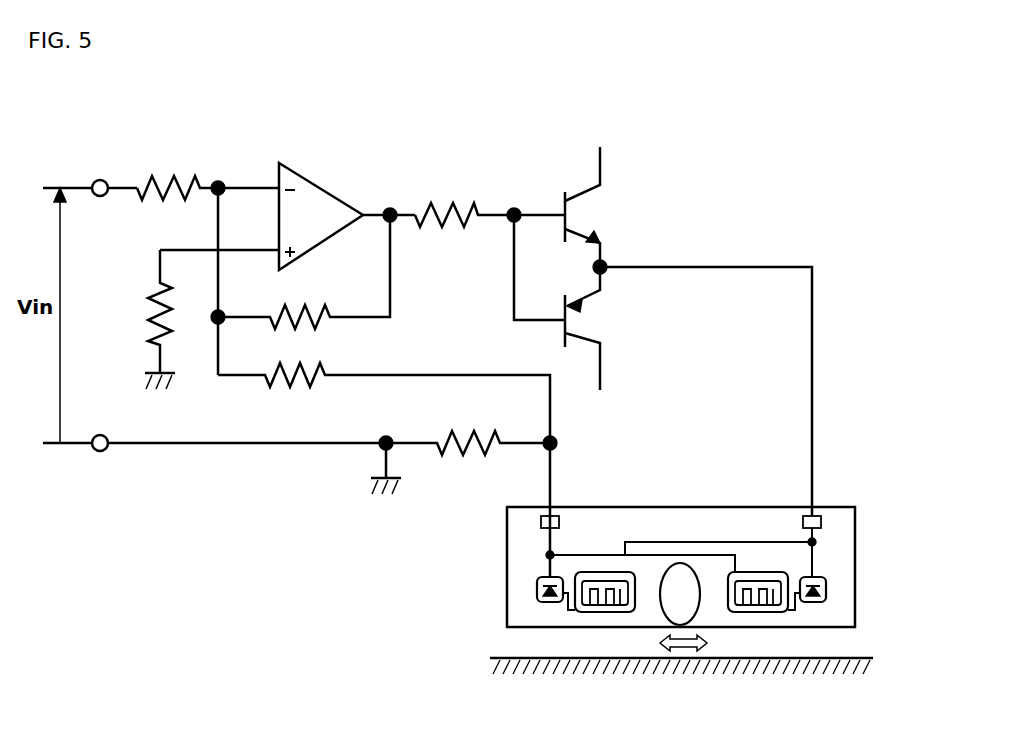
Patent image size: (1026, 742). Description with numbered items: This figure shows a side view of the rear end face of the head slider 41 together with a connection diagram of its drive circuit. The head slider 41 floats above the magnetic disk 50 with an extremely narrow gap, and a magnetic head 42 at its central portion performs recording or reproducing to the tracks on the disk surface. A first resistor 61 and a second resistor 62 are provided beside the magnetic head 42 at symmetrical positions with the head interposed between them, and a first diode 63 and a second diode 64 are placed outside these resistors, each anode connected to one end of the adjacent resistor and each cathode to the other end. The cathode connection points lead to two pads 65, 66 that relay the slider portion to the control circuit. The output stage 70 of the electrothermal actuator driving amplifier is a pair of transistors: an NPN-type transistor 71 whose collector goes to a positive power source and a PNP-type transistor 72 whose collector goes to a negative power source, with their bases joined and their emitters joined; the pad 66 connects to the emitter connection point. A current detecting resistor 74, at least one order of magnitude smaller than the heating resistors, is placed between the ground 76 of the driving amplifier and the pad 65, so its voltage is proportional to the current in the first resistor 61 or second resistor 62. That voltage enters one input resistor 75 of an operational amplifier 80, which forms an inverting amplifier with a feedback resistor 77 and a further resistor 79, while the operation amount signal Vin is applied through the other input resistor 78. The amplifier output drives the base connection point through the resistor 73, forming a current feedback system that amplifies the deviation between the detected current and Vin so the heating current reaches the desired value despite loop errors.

The head slider 41 is at (858, 608).
The magnetic head 42 is at (684, 566).
The magnetic disk 50 is at (497, 657).
The first resistor 61 is at (608, 613).
The second resistor 62 is at (756, 613).
The first diode 63 is at (546, 603).
The second diode 64 is at (836, 603).
The pad 65 is at (567, 505).
The pad 66 is at (822, 523).
The output stage 70 is at (549, 183).
The NPN-type transistor 71 is at (583, 206).
The PNP-type transistor 72 is at (585, 325).
The resistor 73 is at (432, 203).
The current detecting resistor 74 is at (466, 450).
The input resistor 75 is at (296, 398).
The ground 76 is at (370, 482).
The feedback resistor 77 is at (312, 314).
The input resistor 78 is at (172, 186).
The resistor 79 is at (150, 312).
The operational amplifier 80 is at (300, 165).